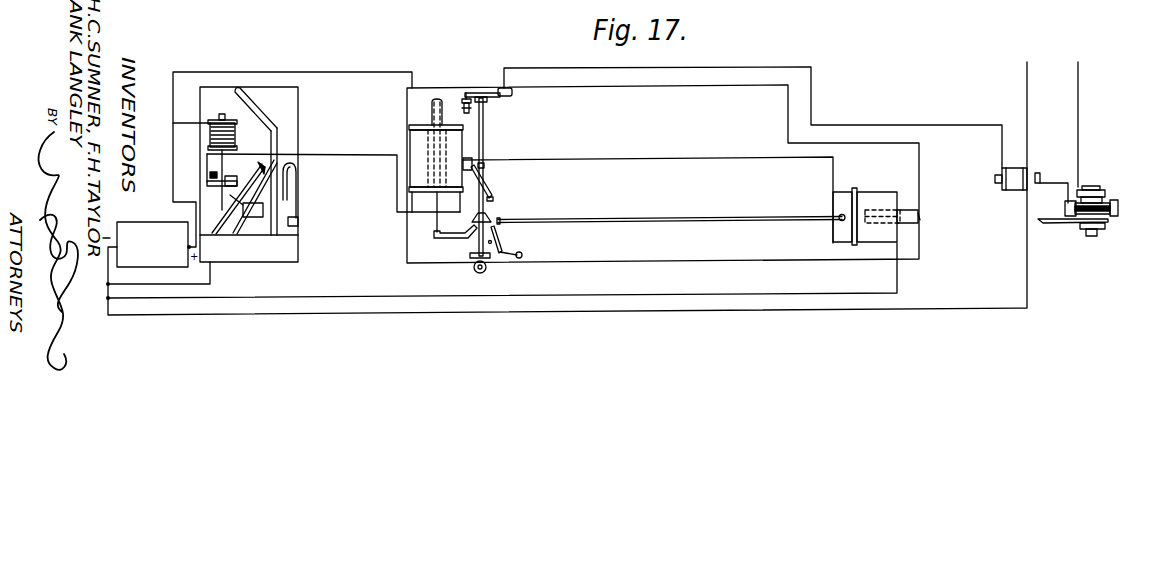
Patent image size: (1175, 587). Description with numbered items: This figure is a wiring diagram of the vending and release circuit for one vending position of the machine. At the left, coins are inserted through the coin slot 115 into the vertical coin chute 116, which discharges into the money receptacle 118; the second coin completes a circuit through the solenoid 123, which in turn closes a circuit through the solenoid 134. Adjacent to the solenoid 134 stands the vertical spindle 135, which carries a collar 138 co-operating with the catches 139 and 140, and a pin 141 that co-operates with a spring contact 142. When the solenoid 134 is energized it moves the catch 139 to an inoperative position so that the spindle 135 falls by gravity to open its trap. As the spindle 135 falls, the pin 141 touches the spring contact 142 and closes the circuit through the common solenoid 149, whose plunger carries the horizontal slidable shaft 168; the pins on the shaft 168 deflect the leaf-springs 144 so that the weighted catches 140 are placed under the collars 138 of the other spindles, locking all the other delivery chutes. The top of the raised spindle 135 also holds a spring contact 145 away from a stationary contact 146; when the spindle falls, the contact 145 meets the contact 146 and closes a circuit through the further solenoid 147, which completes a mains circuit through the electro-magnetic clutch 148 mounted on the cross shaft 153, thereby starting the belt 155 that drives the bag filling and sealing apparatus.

The coin slot 115 is at (243, 92).
The vertical coin chute 116 is at (277, 133).
The money receptacle 118 is at (249, 174).
The solenoid 123 is at (221, 120).
The solenoid 134 is at (412, 140).
The vertical spindle 135 is at (484, 142).
The collar 138 is at (488, 213).
The catch 139 is at (468, 254).
The catch 140 is at (500, 256).
The pin 141 is at (485, 167).
The spring contact 142 is at (490, 194).
The leaf-spring 144 is at (502, 237).
The spring contact 145 is at (466, 91).
The stationary contact 146 is at (472, 111).
The solenoid 147 is at (1014, 185).
The electro-magnetic clutch 148 is at (1116, 206).
The common solenoid 149 is at (868, 200).
The cross shaft 153 is at (1097, 232).
The belt 155 is at (1052, 223).
The horizontal slidable shaft 168 is at (658, 217).